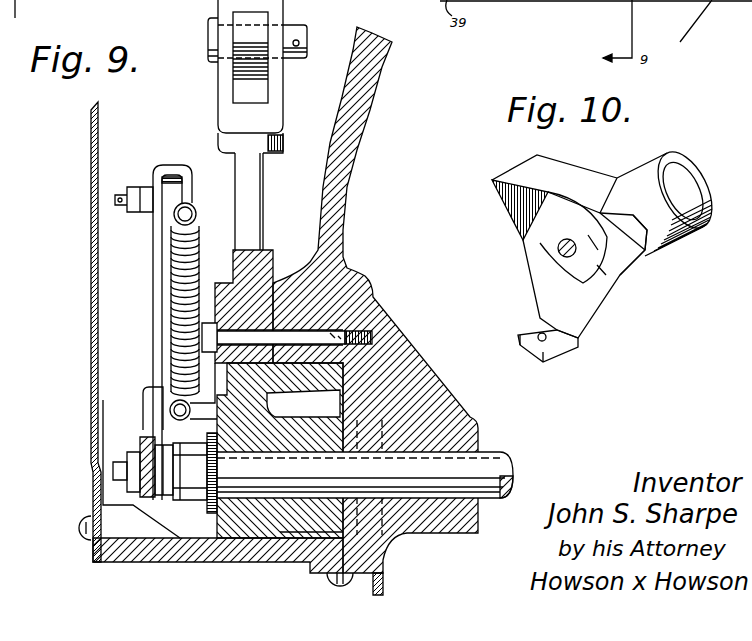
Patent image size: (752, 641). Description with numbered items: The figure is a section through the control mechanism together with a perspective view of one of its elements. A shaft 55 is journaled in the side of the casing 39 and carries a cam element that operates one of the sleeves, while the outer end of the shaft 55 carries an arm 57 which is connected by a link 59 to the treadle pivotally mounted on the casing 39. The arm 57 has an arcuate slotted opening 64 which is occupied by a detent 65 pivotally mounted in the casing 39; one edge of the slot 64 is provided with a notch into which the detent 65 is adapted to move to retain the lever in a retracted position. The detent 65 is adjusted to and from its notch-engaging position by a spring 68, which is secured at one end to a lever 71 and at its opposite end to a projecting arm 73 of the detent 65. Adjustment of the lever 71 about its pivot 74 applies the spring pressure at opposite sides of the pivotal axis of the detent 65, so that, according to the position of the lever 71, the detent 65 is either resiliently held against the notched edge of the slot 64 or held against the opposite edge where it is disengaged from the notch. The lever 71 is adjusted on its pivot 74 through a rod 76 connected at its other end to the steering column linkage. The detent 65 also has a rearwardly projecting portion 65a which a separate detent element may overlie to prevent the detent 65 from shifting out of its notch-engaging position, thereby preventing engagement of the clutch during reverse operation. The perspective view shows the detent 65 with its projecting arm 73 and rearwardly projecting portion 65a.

In FIG. 9, the casing 39 is at (350, 143).
In FIG. 9, the shaft 55 is at (478, 470).
In FIG. 9, the arm 57 is at (250, 185).
In FIG. 9, the link 59 is at (262, 12).
In FIG. 9, the arcuate slotted opening 64 is at (217, 313).
In FIG. 9, the detent 65 is at (216, 294).
In FIG. 10, the detent 65 is at (510, 198).
In FIG. 10, the rearwardly projecting portion 65a is at (633, 255).
In FIG. 9, the spring 68 is at (172, 357).
In FIG. 9, the lever 71 is at (158, 248).
In FIG. 9, the projecting arm 73 is at (176, 411).
In FIG. 10, the projecting arm 73 is at (577, 325).
In FIG. 9, the pivot 74 is at (130, 463).
In FIG. 9, the rod 76 is at (133, 192).